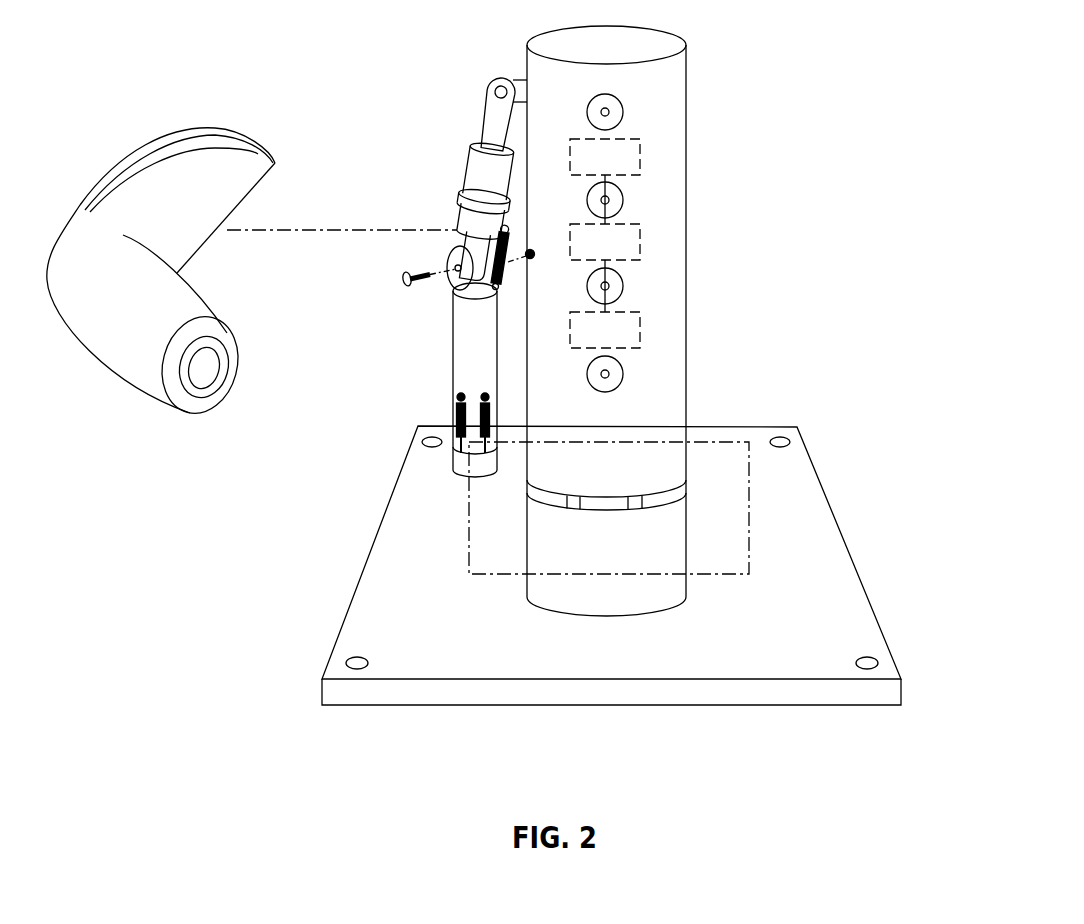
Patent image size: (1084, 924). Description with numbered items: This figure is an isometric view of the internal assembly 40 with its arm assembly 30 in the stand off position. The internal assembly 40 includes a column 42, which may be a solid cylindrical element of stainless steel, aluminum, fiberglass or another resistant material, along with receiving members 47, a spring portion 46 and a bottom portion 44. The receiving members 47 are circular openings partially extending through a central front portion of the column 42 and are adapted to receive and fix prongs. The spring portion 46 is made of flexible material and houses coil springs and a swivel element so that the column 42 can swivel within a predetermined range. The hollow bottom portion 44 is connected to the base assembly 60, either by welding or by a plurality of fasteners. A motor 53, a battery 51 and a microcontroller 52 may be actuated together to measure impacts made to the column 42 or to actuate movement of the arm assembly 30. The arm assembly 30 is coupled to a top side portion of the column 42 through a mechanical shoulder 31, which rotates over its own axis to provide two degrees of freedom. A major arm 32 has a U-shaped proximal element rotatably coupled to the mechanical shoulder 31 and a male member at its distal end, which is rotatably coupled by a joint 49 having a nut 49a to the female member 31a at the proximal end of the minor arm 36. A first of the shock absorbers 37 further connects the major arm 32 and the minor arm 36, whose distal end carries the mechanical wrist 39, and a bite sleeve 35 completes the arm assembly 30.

The arm assembly 30 is at (439, 215).
The mechanical shoulder 31 is at (472, 65).
The female member 31a is at (430, 281).
The major arm 32 is at (450, 158).
The bite sleeve 35 is at (250, 274).
The minor arm 36 is at (446, 380).
The shock absorbers 37 is at (533, 248).
The mechanical wrist 39 is at (423, 445).
The internal assembly 40 is at (568, 508).
The column 42 is at (660, 311).
The bottom portion 44 is at (651, 613).
The spring portion 46 is at (669, 450).
The receiving members 47 is at (691, 359).
The joint 49 is at (395, 269).
The nut 49a is at (548, 265).
The battery 51 is at (674, 304).
The microcontroller 52 is at (674, 217).
The motor 53 is at (674, 130).
The base assembly 60 is at (641, 565).